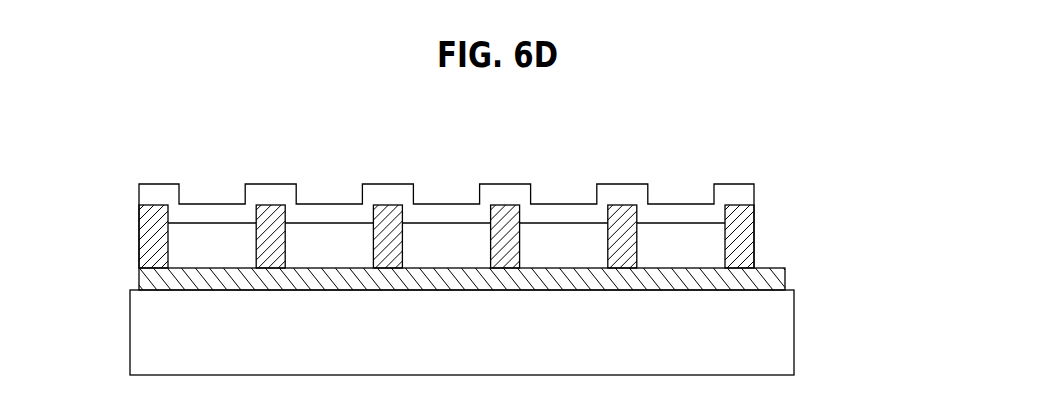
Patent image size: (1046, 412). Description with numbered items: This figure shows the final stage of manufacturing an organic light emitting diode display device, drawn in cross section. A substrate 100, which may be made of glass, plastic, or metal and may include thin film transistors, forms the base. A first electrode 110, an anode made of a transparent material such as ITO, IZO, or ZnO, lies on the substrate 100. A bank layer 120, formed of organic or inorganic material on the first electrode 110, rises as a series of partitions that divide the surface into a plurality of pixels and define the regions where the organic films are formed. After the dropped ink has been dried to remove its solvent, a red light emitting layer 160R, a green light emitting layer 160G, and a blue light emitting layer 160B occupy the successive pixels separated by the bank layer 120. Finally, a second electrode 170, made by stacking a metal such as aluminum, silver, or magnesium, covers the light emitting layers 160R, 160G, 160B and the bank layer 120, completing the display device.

The substrate 100 is at (777, 331).
The first electrode 110 is at (775, 273).
The bank layer 120 is at (747, 220).
The red light emitting layer 160R is at (388, 245).
The green light emitting layer 160G is at (505, 245).
The blue light emitting layer 160B is at (446, 245).
The second electrode 170 is at (730, 193).